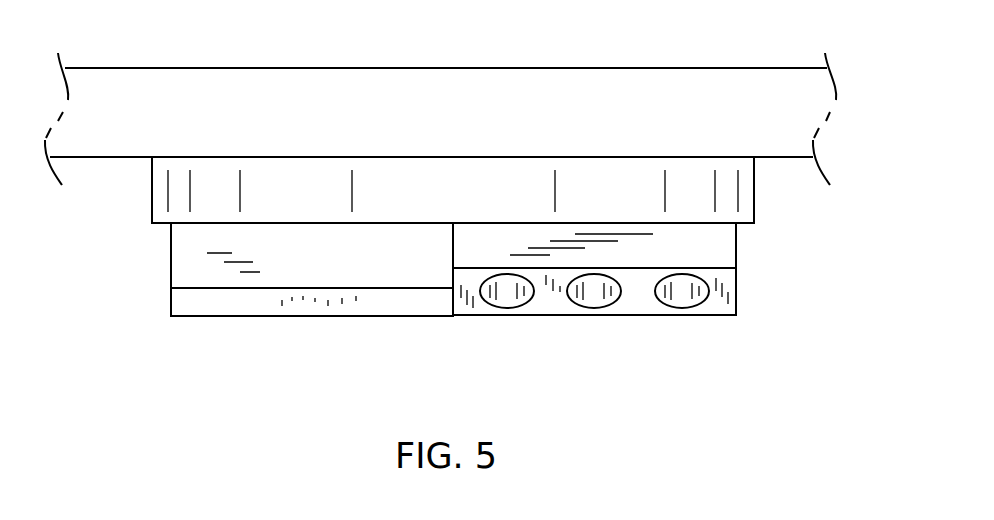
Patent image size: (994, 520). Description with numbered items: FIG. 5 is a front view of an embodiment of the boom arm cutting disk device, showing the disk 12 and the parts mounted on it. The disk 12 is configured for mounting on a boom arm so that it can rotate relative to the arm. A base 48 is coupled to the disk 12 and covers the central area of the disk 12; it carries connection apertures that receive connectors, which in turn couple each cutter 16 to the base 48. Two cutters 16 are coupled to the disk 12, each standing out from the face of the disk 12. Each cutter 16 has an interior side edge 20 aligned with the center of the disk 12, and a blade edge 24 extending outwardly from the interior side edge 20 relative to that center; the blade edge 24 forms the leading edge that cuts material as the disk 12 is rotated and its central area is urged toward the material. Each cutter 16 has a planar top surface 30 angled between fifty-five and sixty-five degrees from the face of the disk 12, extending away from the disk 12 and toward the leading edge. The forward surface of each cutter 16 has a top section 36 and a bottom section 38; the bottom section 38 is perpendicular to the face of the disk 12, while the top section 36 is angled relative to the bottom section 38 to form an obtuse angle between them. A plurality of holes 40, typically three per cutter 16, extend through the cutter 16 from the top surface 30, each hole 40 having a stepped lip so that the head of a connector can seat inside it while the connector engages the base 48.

The disk 12 is at (783, 137).
The cutter 16 is at (170, 322).
The interior side edge 20 is at (453, 280).
The blade edge 24 is at (248, 316).
The top surface 30 is at (545, 305).
The top section 36 is at (185, 299).
The bottom section 38 is at (177, 252).
The hole 40 is at (507, 300).
The base 48 is at (636, 195).